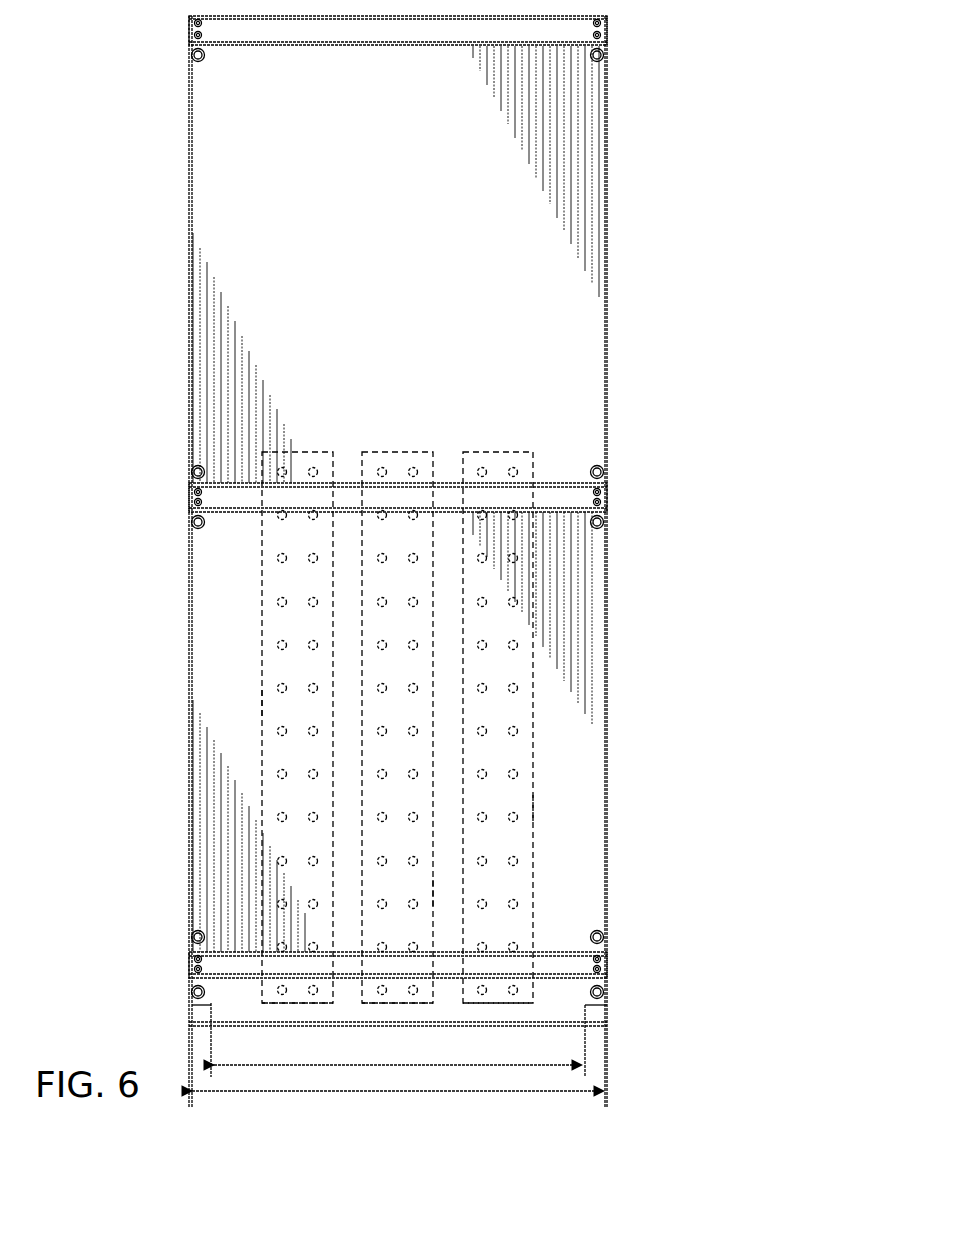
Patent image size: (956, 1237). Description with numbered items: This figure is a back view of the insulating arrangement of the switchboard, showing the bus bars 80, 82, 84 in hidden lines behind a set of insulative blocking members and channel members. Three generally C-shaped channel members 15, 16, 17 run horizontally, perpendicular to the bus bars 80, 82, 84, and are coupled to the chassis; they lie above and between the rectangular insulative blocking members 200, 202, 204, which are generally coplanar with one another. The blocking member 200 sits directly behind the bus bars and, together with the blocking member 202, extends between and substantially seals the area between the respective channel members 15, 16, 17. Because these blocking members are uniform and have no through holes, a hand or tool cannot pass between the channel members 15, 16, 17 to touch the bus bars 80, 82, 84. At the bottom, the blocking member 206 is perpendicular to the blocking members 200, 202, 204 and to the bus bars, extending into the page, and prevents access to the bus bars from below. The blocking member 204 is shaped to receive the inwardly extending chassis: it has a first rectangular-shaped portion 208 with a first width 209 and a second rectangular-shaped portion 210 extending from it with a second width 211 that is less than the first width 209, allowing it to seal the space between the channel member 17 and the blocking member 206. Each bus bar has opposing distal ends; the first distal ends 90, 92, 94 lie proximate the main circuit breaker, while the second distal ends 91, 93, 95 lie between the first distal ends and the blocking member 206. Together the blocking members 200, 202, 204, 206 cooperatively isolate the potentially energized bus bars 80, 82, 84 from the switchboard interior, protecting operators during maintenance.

The channel member 15 is at (262, 36).
The channel member 16 is at (555, 495).
The channel member 17 is at (557, 950).
The insulative blocking member 200 is at (228, 192).
The insulative blocking member 202 is at (215, 632).
The insulative blocking member 204 is at (245, 1002).
The insulative blocking member 206 is at (338, 1025).
The first rectangular-shaped portion 208 is at (245, 990).
The first width 209 is at (258, 1090).
The second rectangular-shaped portion 210 is at (537, 1015).
The second width 211 is at (440, 1067).
The bus bar 80 is at (533, 808).
The bus bar 82 is at (430, 895).
The bus bar 84 is at (262, 703).
The first distal end 90 is at (490, 452).
The second distal end 91 is at (520, 1005).
The first distal end 92 is at (393, 452).
The second distal end 93 is at (413, 1005).
The first distal end 94 is at (305, 450).
The second distal end 95 is at (278, 1005).